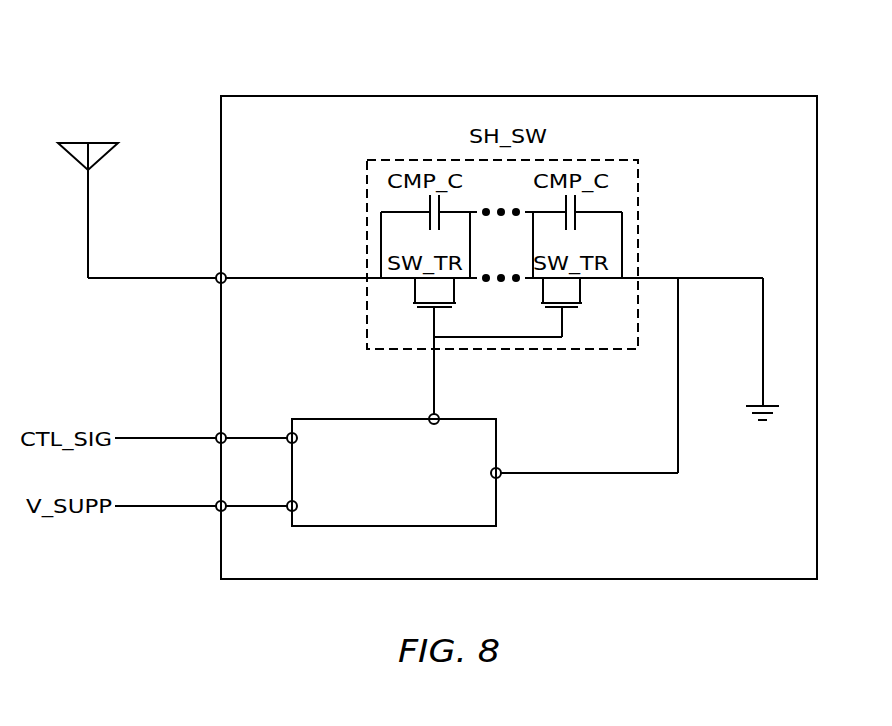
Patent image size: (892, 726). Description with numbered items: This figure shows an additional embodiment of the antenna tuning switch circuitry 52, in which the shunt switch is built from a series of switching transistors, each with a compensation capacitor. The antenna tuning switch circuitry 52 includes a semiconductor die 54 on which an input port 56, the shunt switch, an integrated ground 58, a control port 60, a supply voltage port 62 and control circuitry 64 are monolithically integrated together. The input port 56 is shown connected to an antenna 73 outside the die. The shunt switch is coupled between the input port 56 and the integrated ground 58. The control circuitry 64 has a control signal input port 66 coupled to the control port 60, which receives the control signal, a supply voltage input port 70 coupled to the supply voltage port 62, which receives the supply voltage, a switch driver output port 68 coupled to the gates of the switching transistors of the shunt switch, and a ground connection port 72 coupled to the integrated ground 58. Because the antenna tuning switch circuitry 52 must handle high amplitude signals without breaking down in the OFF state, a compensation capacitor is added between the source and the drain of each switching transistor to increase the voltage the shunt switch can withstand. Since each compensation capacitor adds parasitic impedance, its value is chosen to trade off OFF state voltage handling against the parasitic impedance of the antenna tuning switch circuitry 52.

The antenna tuning switch circuitry 52 is at (556, 38).
The semiconductor die 54 is at (786, 96).
The input port 56 is at (216, 282).
The integrated ground 58 is at (752, 415).
The control port 60 is at (216, 443).
The supply voltage port 62 is at (216, 511).
The control circuitry 64 is at (487, 518).
The control signal input port 66 is at (287, 432).
The switch driver output port 68 is at (431, 413).
The supply voltage input port 70 is at (287, 511).
The ground connection port 72 is at (502, 478).
The antenna 73 is at (88, 143).